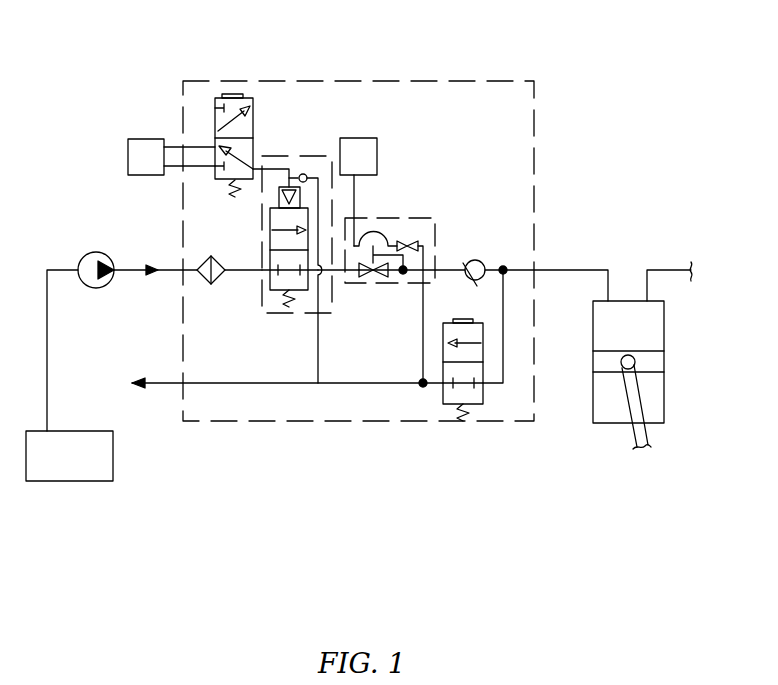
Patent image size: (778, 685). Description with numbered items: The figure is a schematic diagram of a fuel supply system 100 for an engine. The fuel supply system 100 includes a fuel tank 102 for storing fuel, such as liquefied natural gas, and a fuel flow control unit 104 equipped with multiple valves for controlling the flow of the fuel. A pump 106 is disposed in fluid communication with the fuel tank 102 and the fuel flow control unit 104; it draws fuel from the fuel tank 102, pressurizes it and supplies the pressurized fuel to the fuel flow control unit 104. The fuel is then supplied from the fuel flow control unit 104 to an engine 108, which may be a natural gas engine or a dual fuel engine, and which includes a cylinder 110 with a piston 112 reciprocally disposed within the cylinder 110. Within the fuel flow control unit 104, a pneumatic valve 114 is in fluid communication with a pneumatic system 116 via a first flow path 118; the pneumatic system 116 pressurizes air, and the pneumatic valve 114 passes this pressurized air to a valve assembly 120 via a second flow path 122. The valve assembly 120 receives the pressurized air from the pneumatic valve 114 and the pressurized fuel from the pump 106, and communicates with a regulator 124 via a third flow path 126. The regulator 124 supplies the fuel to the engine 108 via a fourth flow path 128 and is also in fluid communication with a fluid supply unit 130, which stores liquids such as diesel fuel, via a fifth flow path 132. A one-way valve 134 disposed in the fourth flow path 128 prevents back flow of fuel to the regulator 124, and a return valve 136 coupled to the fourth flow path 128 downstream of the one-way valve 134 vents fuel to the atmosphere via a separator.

The fuel supply system 100 is at (102, 54).
The fuel tank 102 is at (84, 468).
The fuel flow control unit 104 is at (318, 80).
The pump 106 is at (100, 251).
The engine 108 is at (673, 355).
The cylinder 110 is at (664, 328).
The piston 112 is at (664, 358).
The pneumatic valve 114 is at (215, 104).
The pneumatic system 116 is at (160, 171).
The first flow path 118 is at (174, 168).
The valve assembly 120 is at (306, 155).
The second flow path 122 is at (277, 169).
The regulator 124 is at (423, 217).
The third flow path 126 is at (337, 273).
The fourth flow path 128 is at (447, 268).
The fluid supply unit 130 is at (372, 171).
The fifth flow path 132 is at (355, 193).
The one-way valve 134 is at (476, 260).
The return valve 136 is at (443, 397).